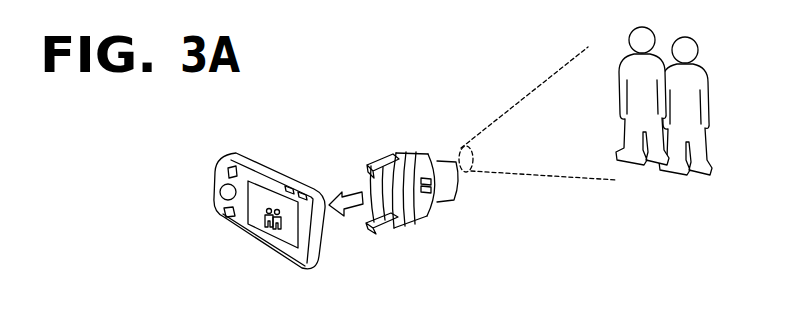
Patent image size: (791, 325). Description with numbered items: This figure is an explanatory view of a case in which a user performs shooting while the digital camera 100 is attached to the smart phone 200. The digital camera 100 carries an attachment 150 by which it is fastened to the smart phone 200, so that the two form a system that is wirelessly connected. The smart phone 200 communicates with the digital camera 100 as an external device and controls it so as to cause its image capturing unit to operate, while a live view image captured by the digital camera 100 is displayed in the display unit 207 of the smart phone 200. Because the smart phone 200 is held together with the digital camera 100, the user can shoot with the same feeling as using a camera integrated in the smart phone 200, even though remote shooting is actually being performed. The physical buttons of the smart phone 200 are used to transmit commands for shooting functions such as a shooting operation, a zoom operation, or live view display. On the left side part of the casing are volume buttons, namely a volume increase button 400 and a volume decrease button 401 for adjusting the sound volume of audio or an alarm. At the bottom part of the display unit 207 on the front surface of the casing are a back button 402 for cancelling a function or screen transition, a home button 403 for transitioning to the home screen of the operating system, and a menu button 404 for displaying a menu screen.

The digital camera 100 is at (422, 222).
The attachment 150 is at (371, 163).
The smart phone 200 is at (250, 161).
The display unit 207 is at (288, 248).
The volume increase button 400 is at (307, 194).
The volume decrease button 401 is at (291, 185).
The back button 402 is at (229, 164).
The home button 403 is at (217, 193).
The menu button 404 is at (226, 217).